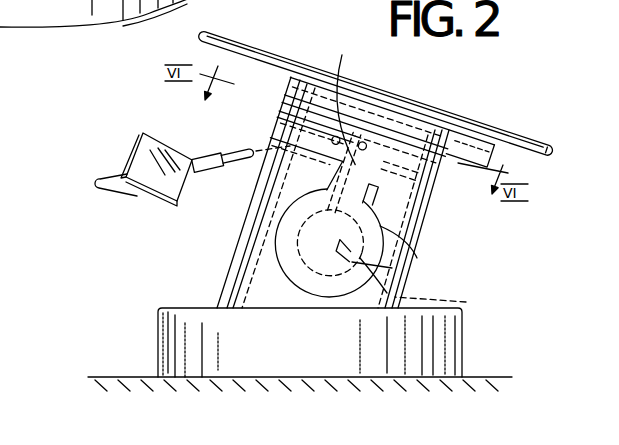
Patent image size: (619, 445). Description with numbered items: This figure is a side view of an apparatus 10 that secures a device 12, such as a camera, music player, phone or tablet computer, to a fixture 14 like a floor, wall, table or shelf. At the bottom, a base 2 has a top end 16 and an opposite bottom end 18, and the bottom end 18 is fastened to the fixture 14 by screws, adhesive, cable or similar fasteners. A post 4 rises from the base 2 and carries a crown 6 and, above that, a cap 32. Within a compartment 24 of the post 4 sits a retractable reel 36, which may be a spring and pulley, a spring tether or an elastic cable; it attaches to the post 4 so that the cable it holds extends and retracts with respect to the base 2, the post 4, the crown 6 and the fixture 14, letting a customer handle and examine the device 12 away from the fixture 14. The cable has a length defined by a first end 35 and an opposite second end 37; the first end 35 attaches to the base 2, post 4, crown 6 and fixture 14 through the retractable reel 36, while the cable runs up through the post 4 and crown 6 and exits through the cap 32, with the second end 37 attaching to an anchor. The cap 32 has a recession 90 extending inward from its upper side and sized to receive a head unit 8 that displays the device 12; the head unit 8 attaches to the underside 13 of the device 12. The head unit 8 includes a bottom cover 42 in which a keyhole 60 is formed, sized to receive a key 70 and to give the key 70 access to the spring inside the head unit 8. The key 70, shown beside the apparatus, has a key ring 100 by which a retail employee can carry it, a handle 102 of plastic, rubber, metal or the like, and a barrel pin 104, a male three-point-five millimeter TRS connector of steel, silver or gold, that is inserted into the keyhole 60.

The base 2 is at (158, 328).
The post 4 is at (222, 283).
The crown 6 is at (437, 175).
The head unit 8 is at (453, 143).
The apparatus 10 is at (457, 249).
The device 12 is at (495, 128).
The underside 13 is at (537, 160).
The fixture 14 is at (108, 377).
The top end 16 is at (178, 309).
The bottom end 18 is at (182, 378).
The compartment 24 is at (413, 256).
The cap 32 is at (442, 163).
The first end 35 is at (378, 276).
The retractable reel 36 is at (440, 302).
The second end 37 is at (340, 122).
The bottom cover 42 is at (283, 100).
The keyhole 60 is at (333, 141).
The key 70 is at (147, 148).
The recession 90 is at (428, 167).
The key ring 100 is at (106, 190).
The handle 102 is at (133, 152).
The barrel pin 104 is at (233, 152).